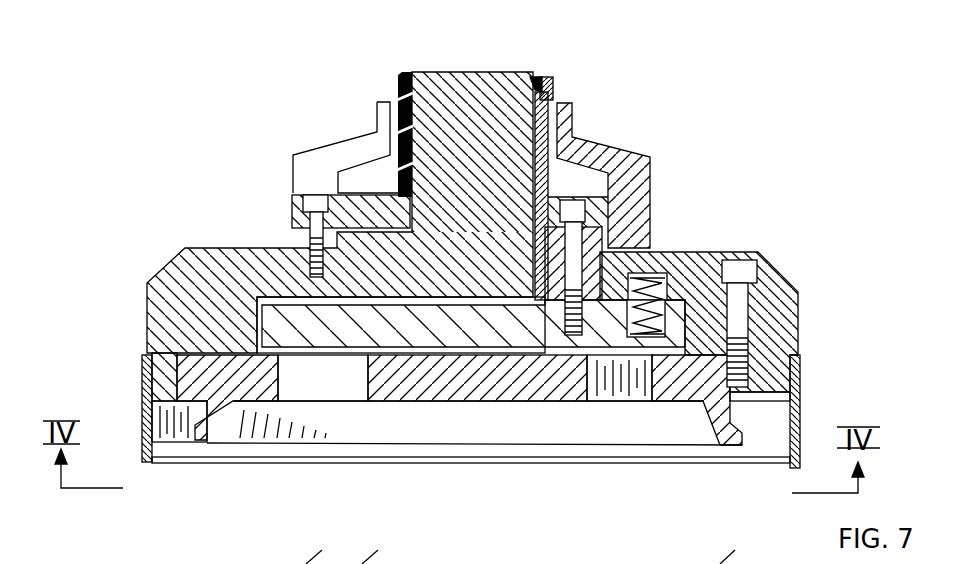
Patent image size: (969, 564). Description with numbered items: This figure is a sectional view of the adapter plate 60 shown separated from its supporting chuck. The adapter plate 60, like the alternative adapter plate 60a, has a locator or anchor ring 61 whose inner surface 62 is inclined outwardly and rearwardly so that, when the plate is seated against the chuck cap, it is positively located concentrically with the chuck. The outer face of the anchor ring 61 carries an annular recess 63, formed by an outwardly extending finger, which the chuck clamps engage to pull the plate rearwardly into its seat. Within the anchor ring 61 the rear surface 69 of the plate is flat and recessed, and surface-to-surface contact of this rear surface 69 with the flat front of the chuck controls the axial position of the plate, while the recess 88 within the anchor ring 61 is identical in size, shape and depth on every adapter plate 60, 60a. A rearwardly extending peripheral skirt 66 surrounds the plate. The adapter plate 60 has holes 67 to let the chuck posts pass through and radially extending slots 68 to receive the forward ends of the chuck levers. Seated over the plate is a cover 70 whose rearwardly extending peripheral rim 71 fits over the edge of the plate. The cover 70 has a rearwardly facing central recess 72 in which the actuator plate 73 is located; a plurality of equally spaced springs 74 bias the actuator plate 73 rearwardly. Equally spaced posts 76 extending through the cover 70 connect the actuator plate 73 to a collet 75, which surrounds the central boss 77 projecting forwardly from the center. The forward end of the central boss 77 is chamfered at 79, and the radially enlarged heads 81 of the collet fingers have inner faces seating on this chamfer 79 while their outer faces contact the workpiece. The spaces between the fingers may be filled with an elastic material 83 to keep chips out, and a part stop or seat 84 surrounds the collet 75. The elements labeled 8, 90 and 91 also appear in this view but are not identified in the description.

The clamping bolt 8 is at (548, 137).
The adapter plate 60 is at (782, 267).
The adapter plate 60a is at (747, 550).
The anchor ring 61 is at (200, 449).
The inner surface 62 is at (234, 418).
The annular recess 63 is at (742, 410).
The peripheral skirt 66 is at (802, 377).
The holes 67 is at (635, 380).
The radially extending slots 68 is at (355, 392).
The rear surface 69 is at (568, 414).
The cover 70 is at (157, 275).
The peripheral rim 71 is at (142, 356).
The central recess 72 is at (255, 290).
The actuator plate 73 is at (450, 332).
The springs 74 is at (650, 280).
The collet 75 is at (572, 86).
The posts 76 is at (592, 244).
The central boss 77 is at (470, 72).
The chamfer 79 is at (548, 76).
The heads 81 is at (546, 90).
The elastic material 83 is at (398, 88).
The part stop 84 is at (392, 98).
The recess 88 is at (303, 433).
The roller 90 is at (495, 550).
The roller axle 91 is at (383, 550).